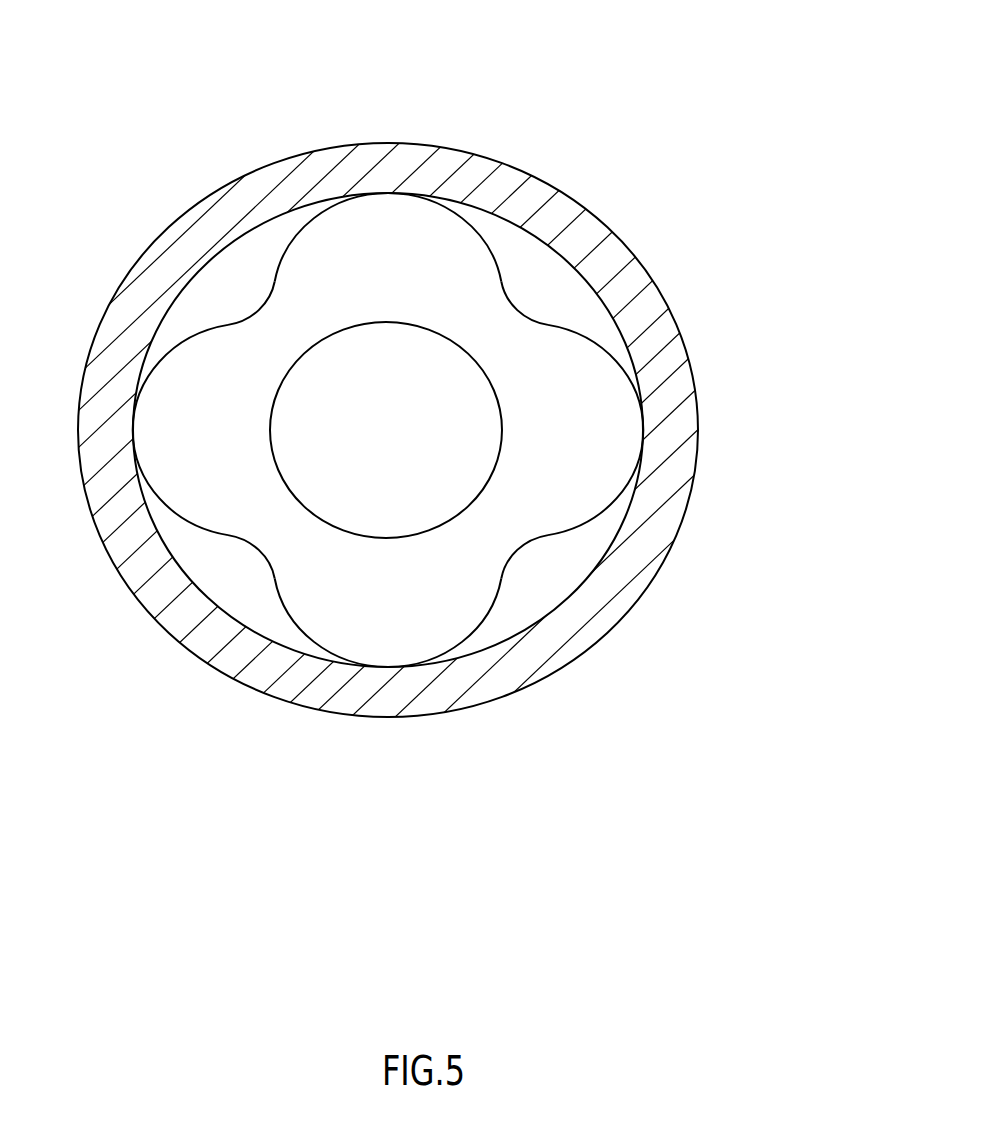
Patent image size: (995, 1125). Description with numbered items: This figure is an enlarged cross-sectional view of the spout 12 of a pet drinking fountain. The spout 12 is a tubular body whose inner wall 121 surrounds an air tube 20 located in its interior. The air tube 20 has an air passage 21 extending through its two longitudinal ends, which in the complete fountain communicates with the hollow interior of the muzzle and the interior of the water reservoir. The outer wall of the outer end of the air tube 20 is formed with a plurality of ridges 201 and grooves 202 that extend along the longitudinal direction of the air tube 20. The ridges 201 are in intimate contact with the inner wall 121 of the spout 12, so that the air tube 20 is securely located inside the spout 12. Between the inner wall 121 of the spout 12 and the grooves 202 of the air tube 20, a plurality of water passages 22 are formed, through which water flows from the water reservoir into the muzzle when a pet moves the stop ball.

The spout 12 is at (635, 287).
The inner wall 121 is at (677, 413).
The air tube 20 is at (500, 414).
The ridges 201 is at (595, 430).
The grooves 202 is at (251, 303).
The air passage 21 is at (320, 483).
The water passage 22 is at (524, 556).